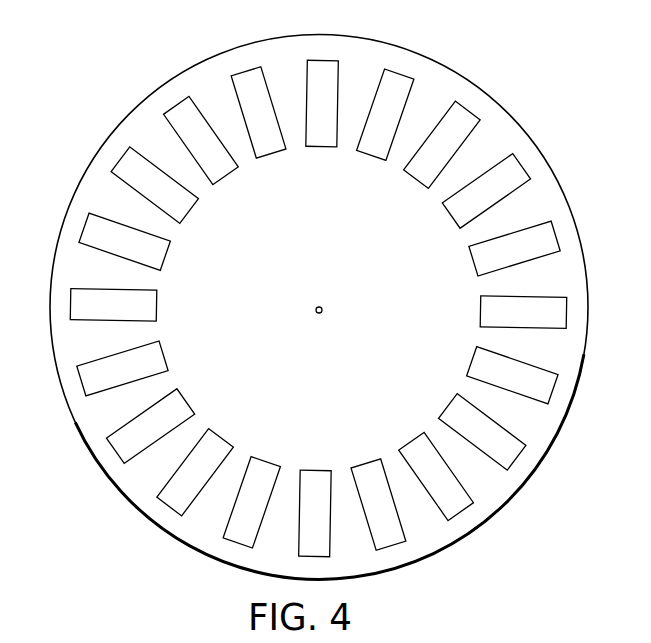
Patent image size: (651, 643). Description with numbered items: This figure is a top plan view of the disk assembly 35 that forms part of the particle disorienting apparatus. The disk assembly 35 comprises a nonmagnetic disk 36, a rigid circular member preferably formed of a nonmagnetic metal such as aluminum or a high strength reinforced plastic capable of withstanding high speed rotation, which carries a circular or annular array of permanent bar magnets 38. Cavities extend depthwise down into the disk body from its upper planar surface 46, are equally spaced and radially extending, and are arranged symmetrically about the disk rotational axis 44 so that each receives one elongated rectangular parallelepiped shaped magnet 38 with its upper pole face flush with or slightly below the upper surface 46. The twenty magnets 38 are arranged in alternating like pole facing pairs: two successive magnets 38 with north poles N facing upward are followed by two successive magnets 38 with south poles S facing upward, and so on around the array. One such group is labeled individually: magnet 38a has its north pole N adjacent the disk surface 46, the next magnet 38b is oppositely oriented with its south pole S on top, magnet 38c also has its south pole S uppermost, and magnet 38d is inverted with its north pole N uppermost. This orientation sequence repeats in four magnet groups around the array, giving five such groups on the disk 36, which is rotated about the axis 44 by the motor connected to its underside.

The disk assembly 35 is at (105, 123).
The nonmagnetic disk 36 is at (442, 82).
The permanent bar magnets 38 is at (247, 72).
The magnet 38a is at (548, 238).
The magnet 38b is at (514, 172).
The magnet 38c is at (468, 116).
The magnet 38d is at (397, 91).
The disk rotational axis 44 is at (323, 310).
The upper planar surface 46 is at (397, 248).